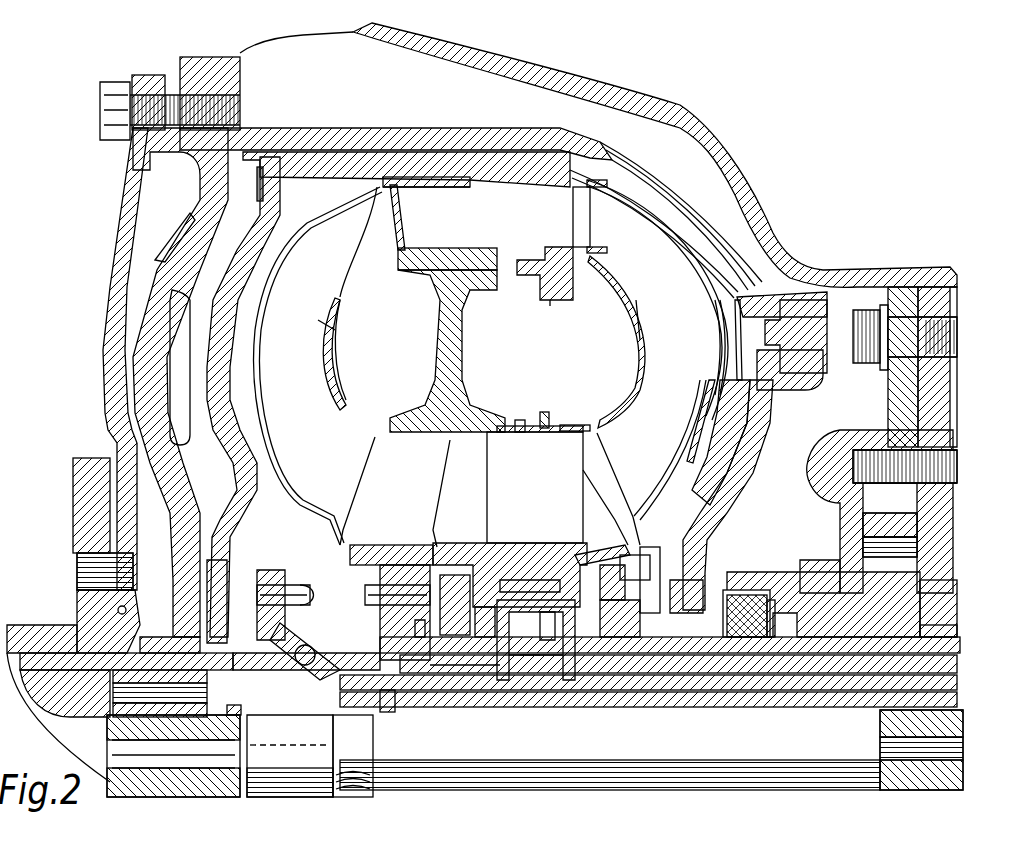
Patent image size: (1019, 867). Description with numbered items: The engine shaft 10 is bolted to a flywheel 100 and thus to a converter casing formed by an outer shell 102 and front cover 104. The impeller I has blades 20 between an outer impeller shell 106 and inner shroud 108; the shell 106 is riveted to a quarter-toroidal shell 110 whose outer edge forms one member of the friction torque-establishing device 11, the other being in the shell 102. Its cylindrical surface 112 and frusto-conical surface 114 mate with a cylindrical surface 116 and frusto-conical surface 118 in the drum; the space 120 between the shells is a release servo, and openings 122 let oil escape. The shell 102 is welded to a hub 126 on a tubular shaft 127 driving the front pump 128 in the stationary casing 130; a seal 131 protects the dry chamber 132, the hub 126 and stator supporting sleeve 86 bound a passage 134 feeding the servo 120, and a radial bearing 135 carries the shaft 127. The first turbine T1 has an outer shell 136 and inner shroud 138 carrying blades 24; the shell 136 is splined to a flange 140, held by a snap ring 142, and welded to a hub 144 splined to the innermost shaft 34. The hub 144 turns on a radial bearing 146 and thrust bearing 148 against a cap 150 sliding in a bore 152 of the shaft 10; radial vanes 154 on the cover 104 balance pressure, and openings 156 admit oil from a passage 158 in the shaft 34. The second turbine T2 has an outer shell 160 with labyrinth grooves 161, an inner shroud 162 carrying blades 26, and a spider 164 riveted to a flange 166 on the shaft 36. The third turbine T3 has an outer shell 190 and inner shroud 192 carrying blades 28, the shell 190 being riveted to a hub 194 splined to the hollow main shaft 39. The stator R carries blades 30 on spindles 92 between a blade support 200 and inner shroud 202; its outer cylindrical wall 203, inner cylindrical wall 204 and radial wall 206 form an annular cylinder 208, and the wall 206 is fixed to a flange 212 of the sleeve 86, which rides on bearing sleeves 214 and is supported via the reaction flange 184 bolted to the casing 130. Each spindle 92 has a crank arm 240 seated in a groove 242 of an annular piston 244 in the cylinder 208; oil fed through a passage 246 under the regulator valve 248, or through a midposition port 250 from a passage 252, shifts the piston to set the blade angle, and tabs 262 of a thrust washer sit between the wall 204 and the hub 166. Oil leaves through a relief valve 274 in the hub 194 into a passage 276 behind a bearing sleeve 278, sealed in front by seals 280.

The engine shaft 10 is at (20, 626).
The friction torque-establishing device 11 is at (767, 335).
The impeller blades 20 is at (640, 303).
The blades 24 is at (560, 228).
The blades 26 is at (410, 238).
The blades 28 is at (325, 372).
The blades 30 is at (555, 505).
The innermost shaft 34 is at (123, 727).
The shaft 36 is at (955, 692).
The hollow main shaft 39 is at (955, 712).
The stator supporting sleeve 86 is at (945, 658).
The spindles 92 is at (522, 420).
The flywheel 100 is at (130, 205).
The outer shell 102 is at (385, 140).
The front cover 104 is at (217, 197).
The outer impeller shell 106 is at (684, 238).
The inner shroud 108 is at (712, 335).
The quarter-toroidal shell 110 is at (712, 460).
The cylindrical surface 112 is at (722, 382).
The frusto-conical surface 114 is at (732, 315).
The cylindrical surface 116 is at (800, 385).
The frusto-conical surface 118 is at (772, 298).
The space 120 is at (762, 425).
The openings 122 is at (830, 325).
The hub 126 is at (722, 592).
The tubular shaft 127 is at (958, 634).
The oil pump 128 is at (958, 592).
The stationary casing 130 is at (852, 272).
The seal 131 is at (745, 600).
The dry chamber 132 is at (832, 508).
The passage 134 is at (690, 627).
The radial bearing 135 is at (823, 598).
The outer supporting shell 136 is at (455, 162).
The inner shroud 138 is at (545, 273).
The T1 flange 140 is at (272, 208).
The snap ring 142 is at (260, 206).
The hub 144 is at (248, 628).
The radial bearing 146 is at (125, 688).
The thrust bearing 148 is at (185, 620).
The cap 150 is at (90, 680).
The bore 152 is at (38, 630).
The radial vanes 154 is at (192, 296).
The openings 156 is at (118, 708).
The passage 158 is at (240, 757).
The outer shell 160 is at (430, 187).
The grooves 161 is at (410, 188).
The inner shroud 162 is at (452, 262).
The spider 164 is at (462, 350).
The flange 166 is at (380, 615).
The reaction flange 184 is at (962, 297).
The outer shell 190 is at (270, 278).
The inner shroud 192 is at (335, 385).
The hub 194 is at (295, 612).
The blade support 200 is at (500, 545).
The inner shroud 202 is at (562, 416).
The outer cylindrical wall 203 is at (445, 548).
The inner cylindrical wall 204 is at (437, 690).
The radial wall 206 is at (600, 615).
The annular cylinder 208 is at (453, 605).
The flange 212 is at (590, 555).
The bearing sleeves 214 is at (560, 690).
The crank arm 240 is at (530, 640).
The annular groove 242 is at (560, 660).
The annular piston 244 is at (485, 616).
The passage 246 is at (950, 678).
The regulator valve 248 is at (525, 580).
The midposition port 250 is at (532, 700).
The passage 252 is at (715, 708).
The tabs 262 is at (435, 638).
The relief valve 274 is at (315, 645).
The passage 276 is at (350, 722).
The bearing sleeve 278 is at (290, 725).
The seals 280 is at (250, 712).
The first turbine T1 is at (549, 306).
The second turbine T2 is at (423, 280).
The third turbine T3 is at (342, 345).
The impeller I is at (626, 343).
The stator R is at (540, 415).